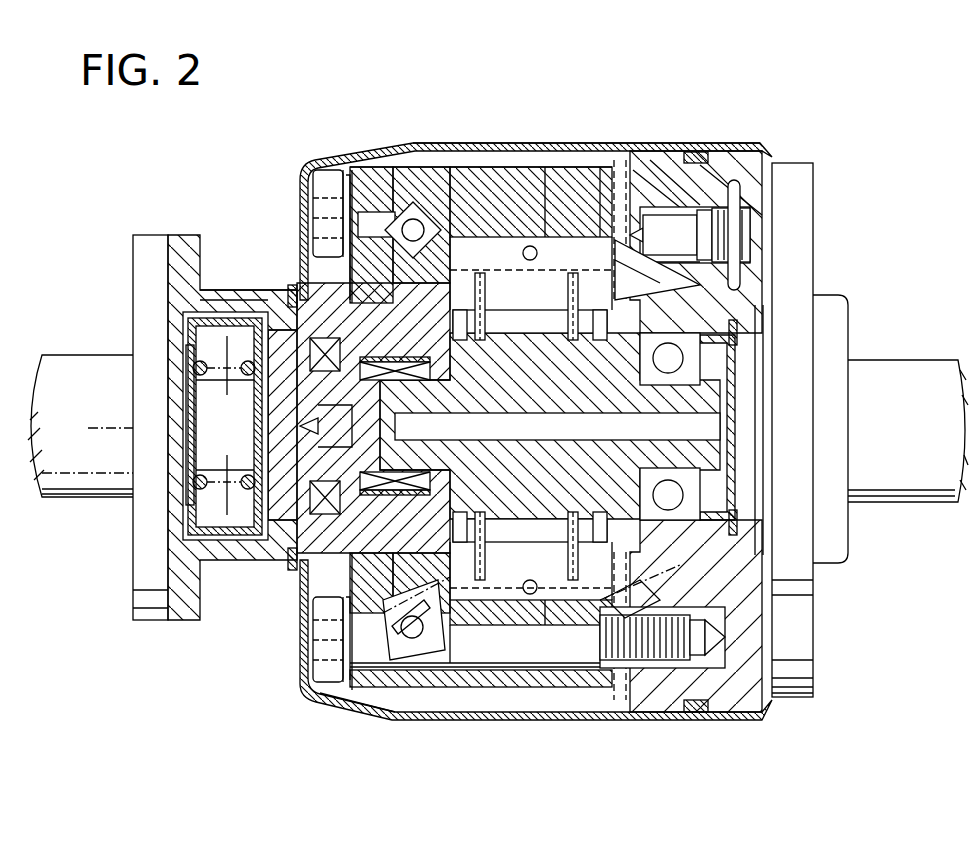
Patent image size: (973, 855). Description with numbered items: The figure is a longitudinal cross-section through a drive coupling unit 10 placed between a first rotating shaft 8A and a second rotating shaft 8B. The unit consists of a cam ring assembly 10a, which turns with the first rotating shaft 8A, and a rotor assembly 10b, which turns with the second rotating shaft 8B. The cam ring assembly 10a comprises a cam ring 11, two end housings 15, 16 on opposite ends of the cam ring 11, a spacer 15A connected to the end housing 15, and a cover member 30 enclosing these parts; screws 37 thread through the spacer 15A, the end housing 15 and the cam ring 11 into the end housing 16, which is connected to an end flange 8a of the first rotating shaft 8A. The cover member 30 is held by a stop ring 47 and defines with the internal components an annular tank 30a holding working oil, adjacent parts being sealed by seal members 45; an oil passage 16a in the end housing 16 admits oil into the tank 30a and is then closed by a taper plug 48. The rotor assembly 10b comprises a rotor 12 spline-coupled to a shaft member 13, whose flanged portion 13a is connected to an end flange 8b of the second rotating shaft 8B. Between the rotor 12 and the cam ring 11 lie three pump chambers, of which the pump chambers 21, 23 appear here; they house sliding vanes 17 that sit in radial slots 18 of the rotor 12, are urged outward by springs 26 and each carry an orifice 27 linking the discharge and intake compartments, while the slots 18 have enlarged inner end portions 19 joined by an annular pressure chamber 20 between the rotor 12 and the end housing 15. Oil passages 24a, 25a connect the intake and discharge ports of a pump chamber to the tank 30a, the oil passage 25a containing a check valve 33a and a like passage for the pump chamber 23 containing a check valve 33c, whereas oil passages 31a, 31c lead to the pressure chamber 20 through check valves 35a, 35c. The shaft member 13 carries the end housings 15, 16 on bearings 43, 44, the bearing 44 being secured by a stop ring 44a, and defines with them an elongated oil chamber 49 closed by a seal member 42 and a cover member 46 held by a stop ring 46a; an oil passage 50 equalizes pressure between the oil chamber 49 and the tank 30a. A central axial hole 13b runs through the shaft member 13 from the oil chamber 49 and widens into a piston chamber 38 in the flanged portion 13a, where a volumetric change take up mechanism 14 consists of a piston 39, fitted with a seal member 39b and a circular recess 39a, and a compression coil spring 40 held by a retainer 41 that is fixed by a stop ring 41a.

The first rotating shaft 8A is at (940, 488).
The second rotating shaft 8B is at (78, 365).
The end flange 8a is at (803, 668).
The end flange 8b is at (146, 245).
The drive coupling unit 10 is at (293, 658).
The cam ring assembly 10a is at (636, 140).
The rotor assembly 10b is at (208, 290).
The cam ring 11 is at (500, 180).
The rotor 12 is at (520, 620).
The shaft member 13 is at (420, 453).
The flanged portion 13a is at (188, 245).
The central axial hole 13b is at (557, 426).
The volumetric change take up mechanism 14 is at (237, 562).
The end housing 15 is at (455, 682).
The spacer 15A is at (357, 703).
The end housing 16 is at (719, 700).
The oil passage 16a is at (656, 172).
The sliding vanes 17 is at (562, 180).
The radial slots 18 is at (594, 185).
The enlarged cylindrical inner end portions 19 is at (522, 335).
The annular pressure chamber 20 is at (590, 322).
The pump chamber 21 is at (531, 273).
The pump chamber 23 is at (590, 600).
The oil passage 24a is at (403, 287).
The oil passage 25a is at (468, 237).
The springs 26 is at (488, 322).
The orifice 27 is at (530, 245).
The cover member 30 is at (415, 145).
The tank 30a is at (470, 148).
The oil passage 31a is at (750, 242).
The oil passage 31c is at (735, 603).
The check valve 33a is at (382, 207).
The check valve 33c is at (402, 690).
The check valve 35a is at (727, 281).
The check valve 35c is at (625, 640).
The screws 37 is at (320, 160).
The piston chamber 38 is at (225, 426).
The piston 39 is at (253, 386).
The circular recess 39a is at (207, 385).
The seal member 39b is at (268, 322).
The compression coil spring 40 is at (192, 386).
The retainer 41 is at (228, 424).
The stop ring 41a is at (190, 530).
The seal member 42 is at (272, 548).
The bearing 43 is at (452, 530).
The bearing 44 is at (760, 573).
The stop ring 44a is at (720, 360).
The seal members 45 is at (330, 592).
The cover member 46 is at (785, 437).
The stop ring 46a is at (770, 520).
The stop ring 47 is at (290, 288).
The taper plug 48 is at (748, 217).
The oil chamber 49 is at (800, 335).
The oil passage 50 is at (615, 160).